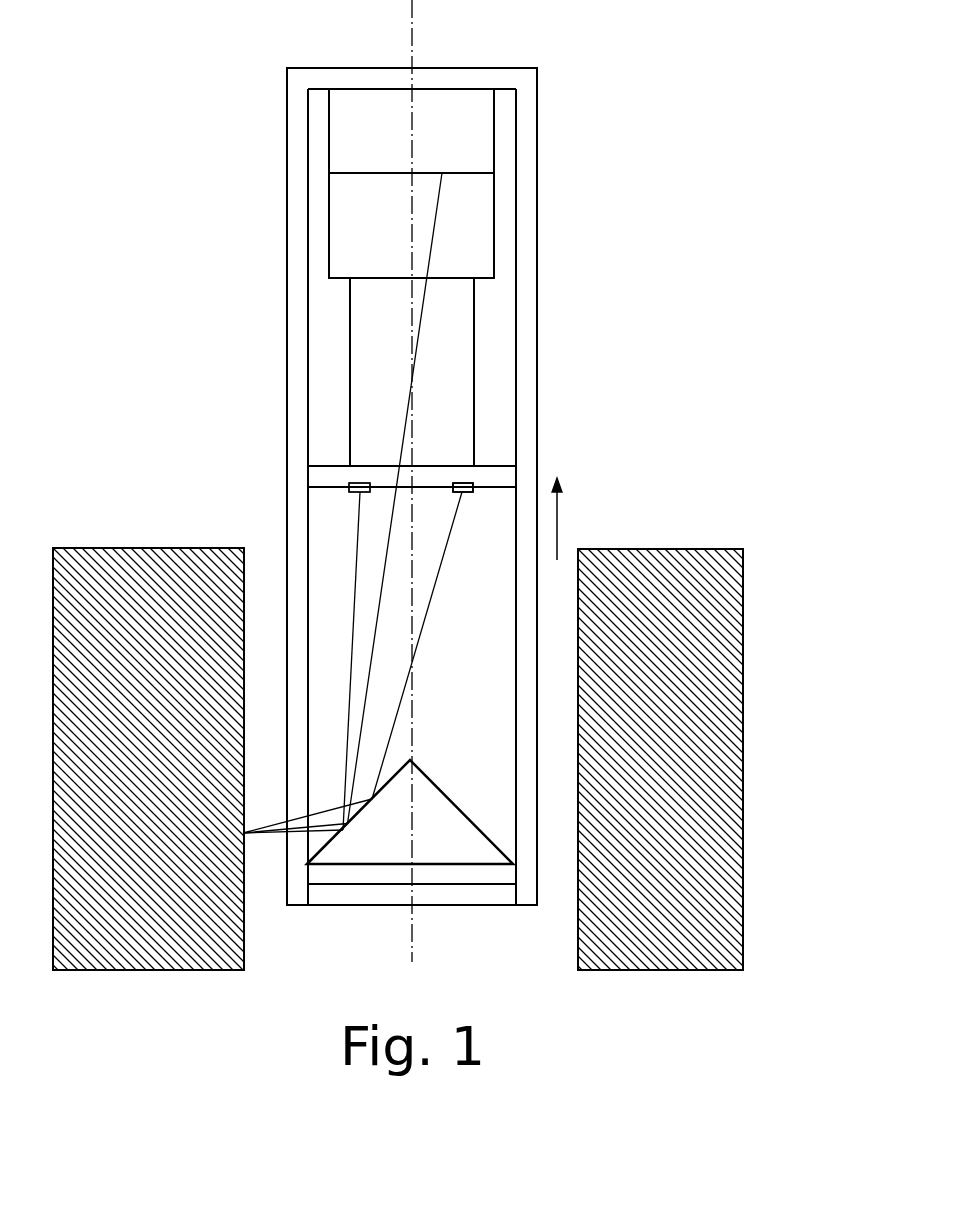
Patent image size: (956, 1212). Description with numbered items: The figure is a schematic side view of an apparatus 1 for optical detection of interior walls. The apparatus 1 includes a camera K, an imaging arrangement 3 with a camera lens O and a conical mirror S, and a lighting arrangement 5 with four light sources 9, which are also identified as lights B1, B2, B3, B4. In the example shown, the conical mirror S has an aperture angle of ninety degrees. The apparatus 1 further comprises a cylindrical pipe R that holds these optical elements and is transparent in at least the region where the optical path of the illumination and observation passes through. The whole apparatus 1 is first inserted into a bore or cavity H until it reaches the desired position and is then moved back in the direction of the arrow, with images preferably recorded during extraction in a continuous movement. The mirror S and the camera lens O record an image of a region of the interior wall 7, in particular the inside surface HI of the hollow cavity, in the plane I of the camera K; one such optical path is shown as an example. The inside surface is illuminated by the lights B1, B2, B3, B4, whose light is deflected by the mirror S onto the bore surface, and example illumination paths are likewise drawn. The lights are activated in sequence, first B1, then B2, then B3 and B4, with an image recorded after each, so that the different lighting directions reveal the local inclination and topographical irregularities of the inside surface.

The apparatus 1 is at (552, 60).
The imaging arrangement 3 is at (547, 349).
The lighting arrangement 5 is at (302, 487).
The interior wall 7 is at (580, 562).
The light sources 9 is at (472, 500).
The light B1 is at (350, 484).
The light B2 is at (474, 484).
The light B3 is at (359, 487).
The light B4 is at (463, 487).
The bore or cavity H is at (270, 573).
The inside surface of the hollow cavity HI is at (244, 758).
The plane of the camera I is at (463, 172).
The camera K is at (494, 228).
The camera lens O is at (474, 340).
The cylindrical pipe R is at (287, 296).
The conical mirror S is at (458, 808).